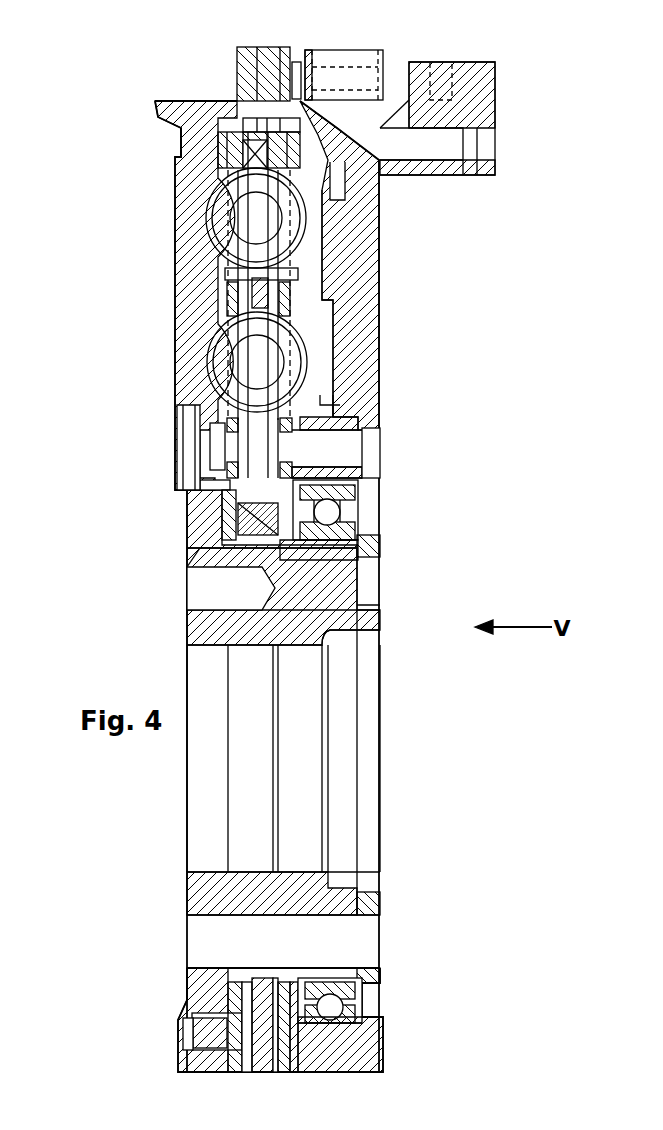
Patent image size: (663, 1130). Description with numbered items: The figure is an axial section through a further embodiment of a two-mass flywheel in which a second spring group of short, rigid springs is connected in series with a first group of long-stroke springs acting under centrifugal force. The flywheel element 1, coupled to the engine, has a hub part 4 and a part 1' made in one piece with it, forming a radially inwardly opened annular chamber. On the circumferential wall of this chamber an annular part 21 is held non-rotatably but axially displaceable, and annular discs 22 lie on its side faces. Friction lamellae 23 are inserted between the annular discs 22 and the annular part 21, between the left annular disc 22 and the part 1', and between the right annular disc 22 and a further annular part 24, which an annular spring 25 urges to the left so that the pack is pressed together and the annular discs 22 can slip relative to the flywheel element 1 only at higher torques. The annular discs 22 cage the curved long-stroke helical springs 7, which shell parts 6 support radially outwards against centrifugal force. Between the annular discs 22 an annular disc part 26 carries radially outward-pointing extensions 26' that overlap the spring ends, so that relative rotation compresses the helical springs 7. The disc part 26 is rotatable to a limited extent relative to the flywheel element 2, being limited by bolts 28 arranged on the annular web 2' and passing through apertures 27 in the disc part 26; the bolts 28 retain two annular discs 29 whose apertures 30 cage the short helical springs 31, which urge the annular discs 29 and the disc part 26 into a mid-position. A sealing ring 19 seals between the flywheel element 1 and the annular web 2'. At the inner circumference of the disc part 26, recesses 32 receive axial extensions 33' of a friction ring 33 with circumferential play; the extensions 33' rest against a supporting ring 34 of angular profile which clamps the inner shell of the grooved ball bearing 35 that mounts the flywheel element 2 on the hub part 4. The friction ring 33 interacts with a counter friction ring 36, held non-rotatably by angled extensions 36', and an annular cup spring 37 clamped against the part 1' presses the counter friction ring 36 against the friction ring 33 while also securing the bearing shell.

The flywheel element 1 is at (242, 569).
The part of flywheel element 1' is at (159, 149).
The flywheel element 2 is at (461, 102).
The annular web 2' is at (315, 438).
The hub part 4 is at (345, 593).
The shell parts 6 is at (222, 172).
The long-stroke helical springs 7 is at (212, 225).
The sealing ring 19 is at (348, 397).
The annular part 21 is at (259, 118).
The annular discs 22 is at (233, 130).
The friction lamellae 23 is at (222, 148).
The further annular part 24 is at (322, 100).
The annular spring 25 is at (342, 62).
The annular disc part 26 is at (212, 271).
The radially outward-pointing extensions 26' is at (205, 222).
The apertures 27 is at (252, 357).
The bolts 28 is at (370, 455).
The annular discs 29 is at (287, 297).
The apertures 30 is at (288, 318).
The helical springs 31 is at (214, 375).
The recesses 32 is at (334, 512).
The friction ring 33 is at (170, 573).
The axial extensions 33' is at (231, 588).
The supporting ring 34 is at (312, 552).
The grooved ball bearing 35 is at (366, 545).
The counter friction ring 36 is at (202, 539).
The angled extensions 36' is at (169, 465).
The annular cup spring 37 is at (229, 508).